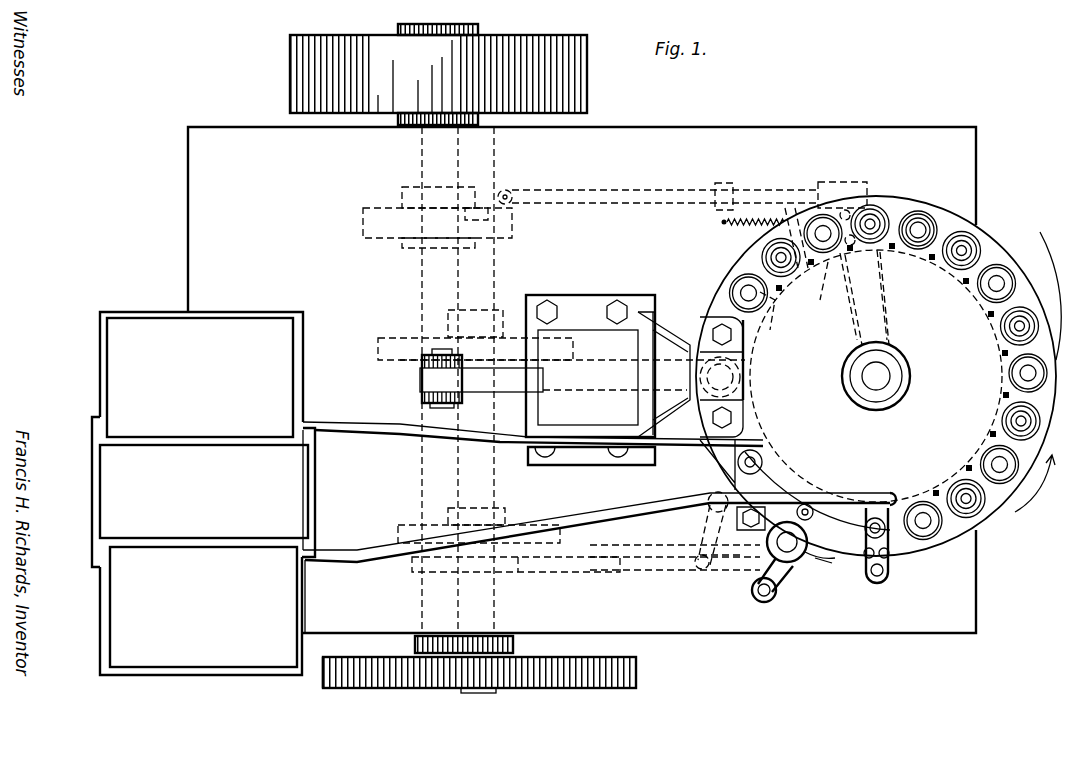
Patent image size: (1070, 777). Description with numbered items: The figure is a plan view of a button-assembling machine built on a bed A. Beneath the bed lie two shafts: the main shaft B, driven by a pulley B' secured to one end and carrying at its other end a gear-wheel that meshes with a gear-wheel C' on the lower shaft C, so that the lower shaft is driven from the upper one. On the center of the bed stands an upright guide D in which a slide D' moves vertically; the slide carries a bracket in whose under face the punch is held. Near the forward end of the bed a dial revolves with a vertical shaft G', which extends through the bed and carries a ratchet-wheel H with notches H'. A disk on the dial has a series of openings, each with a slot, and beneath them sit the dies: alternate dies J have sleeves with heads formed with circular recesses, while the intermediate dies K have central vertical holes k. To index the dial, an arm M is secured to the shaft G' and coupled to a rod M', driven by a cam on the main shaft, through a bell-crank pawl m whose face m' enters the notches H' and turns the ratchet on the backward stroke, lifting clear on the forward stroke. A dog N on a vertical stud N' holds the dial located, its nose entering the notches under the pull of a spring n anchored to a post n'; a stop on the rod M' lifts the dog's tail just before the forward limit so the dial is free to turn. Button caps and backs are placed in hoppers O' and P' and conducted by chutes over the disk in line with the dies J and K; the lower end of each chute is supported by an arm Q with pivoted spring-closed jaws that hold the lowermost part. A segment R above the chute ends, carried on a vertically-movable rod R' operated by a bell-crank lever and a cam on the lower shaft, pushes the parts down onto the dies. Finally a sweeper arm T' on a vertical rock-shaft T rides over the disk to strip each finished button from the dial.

The bed A is at (582, 380).
The main shaft B is at (392, 380).
The pulley B' is at (438, 65).
The lower shaft C is at (493, 380).
The gear-wheel C' is at (306, 679).
The hopper O' is at (201, 374).
The hopper P' is at (201, 611).
The upright guide D is at (590, 380).
The slide D' is at (666, 366).
The rod M' is at (666, 184).
The spring n is at (755, 232).
The post n' is at (705, 224).
The dog N is at (738, 283).
The vertical stud N' is at (750, 242).
The bell-crank pawl m is at (840, 246).
The face of the pawl m' is at (817, 282).
The ratchet-wheel H is at (892, 369).
The notches H' is at (865, 295).
The arm M is at (876, 298).
The vertical shaft G' is at (892, 376).
The dies J is at (999, 284).
The dies K is at (1025, 324).
The vertical holes k is at (1028, 326).
The vertical rock-shaft T is at (786, 491).
The sweeper or stripper arm T' is at (726, 465).
The arm Q is at (866, 564).
The segment R is at (795, 522).
The vertically-movable rod R' is at (817, 515).